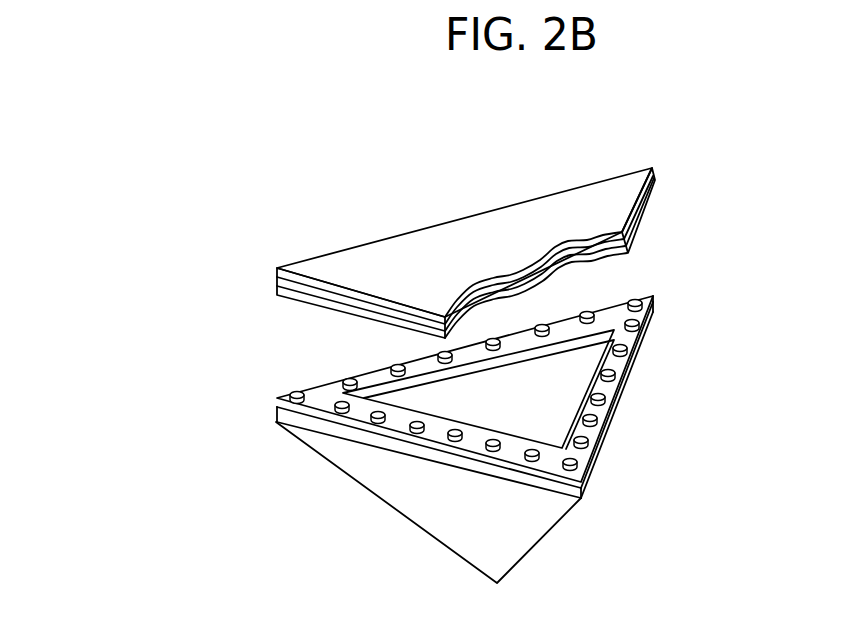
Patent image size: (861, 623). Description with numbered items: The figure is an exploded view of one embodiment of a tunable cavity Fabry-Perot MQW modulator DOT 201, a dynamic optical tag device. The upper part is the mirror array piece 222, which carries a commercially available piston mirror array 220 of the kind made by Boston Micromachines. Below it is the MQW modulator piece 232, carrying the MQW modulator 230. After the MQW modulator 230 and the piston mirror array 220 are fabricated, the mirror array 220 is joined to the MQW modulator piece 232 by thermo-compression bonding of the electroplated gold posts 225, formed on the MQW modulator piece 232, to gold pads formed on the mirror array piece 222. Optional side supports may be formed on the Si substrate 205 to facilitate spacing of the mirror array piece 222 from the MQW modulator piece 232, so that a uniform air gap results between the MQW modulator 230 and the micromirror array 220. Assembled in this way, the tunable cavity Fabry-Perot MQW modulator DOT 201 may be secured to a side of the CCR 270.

The tunable cavity Fabry-Perot MQW modulator DOT 201 is at (195, 96).
The Si substrate 205 is at (475, 253).
The mirror array piece 222 is at (463, 264).
The piston mirror array 220 is at (552, 279).
The electroplated gold posts 225 is at (336, 381).
The MQW modulator 230 is at (352, 378).
The MQW modulator piece 232 is at (258, 410).
The CCR 270 is at (330, 463).